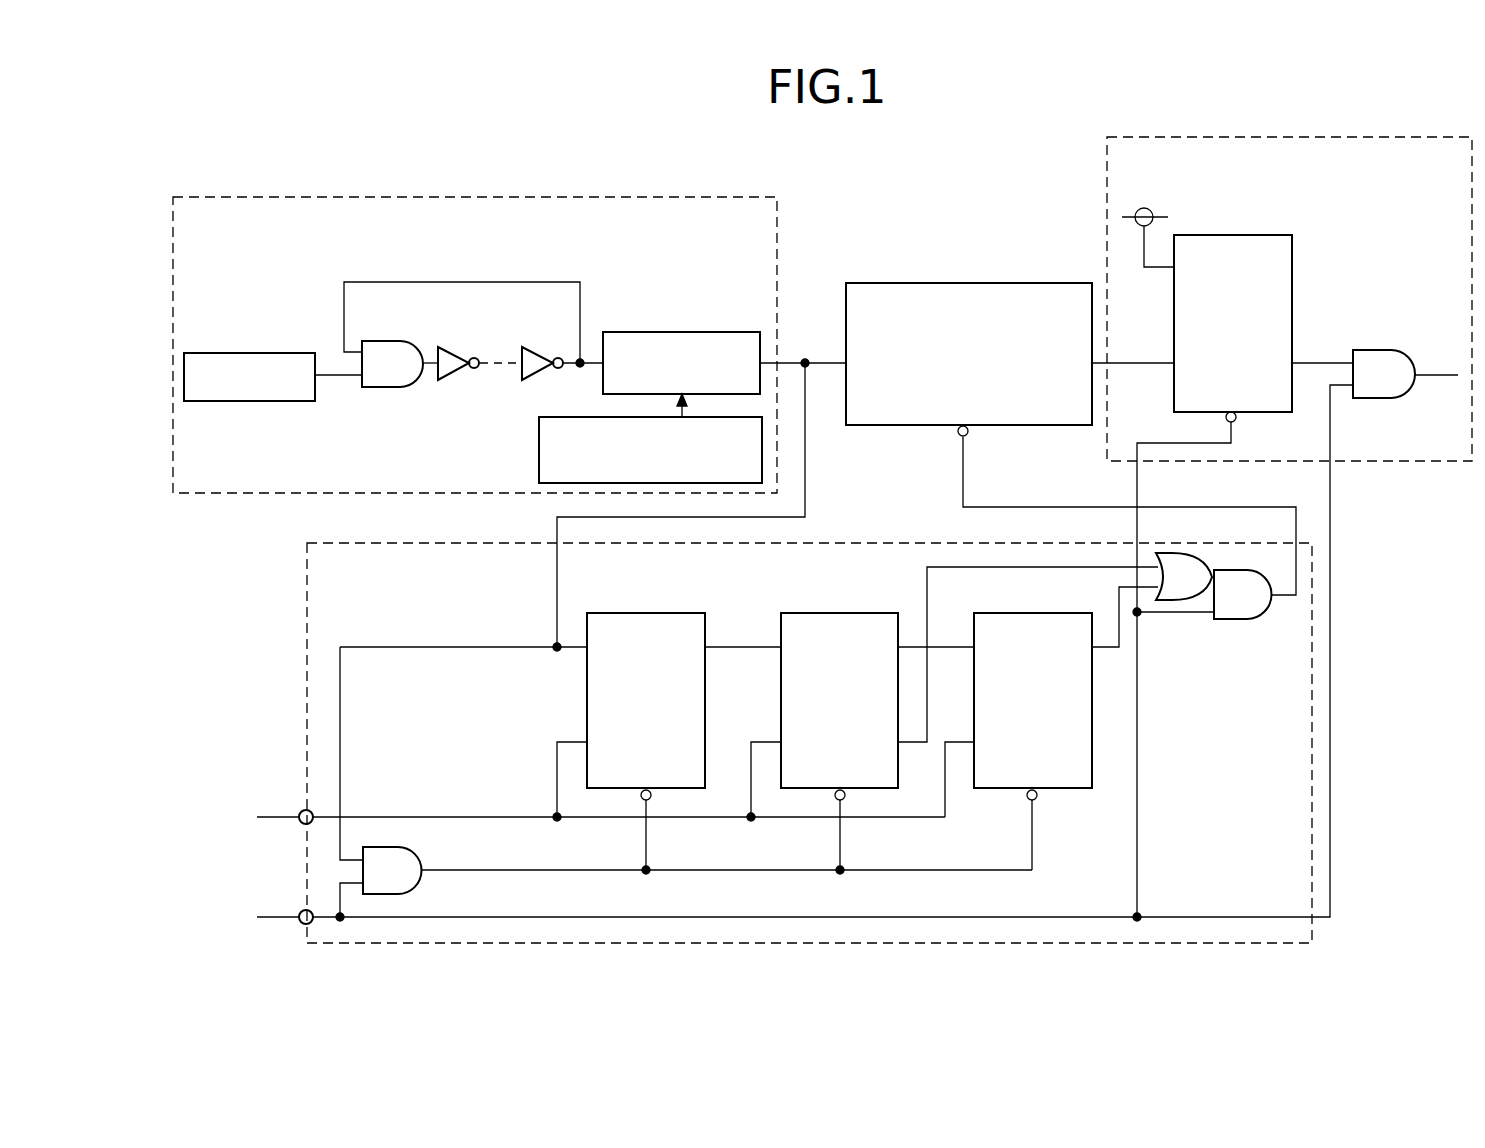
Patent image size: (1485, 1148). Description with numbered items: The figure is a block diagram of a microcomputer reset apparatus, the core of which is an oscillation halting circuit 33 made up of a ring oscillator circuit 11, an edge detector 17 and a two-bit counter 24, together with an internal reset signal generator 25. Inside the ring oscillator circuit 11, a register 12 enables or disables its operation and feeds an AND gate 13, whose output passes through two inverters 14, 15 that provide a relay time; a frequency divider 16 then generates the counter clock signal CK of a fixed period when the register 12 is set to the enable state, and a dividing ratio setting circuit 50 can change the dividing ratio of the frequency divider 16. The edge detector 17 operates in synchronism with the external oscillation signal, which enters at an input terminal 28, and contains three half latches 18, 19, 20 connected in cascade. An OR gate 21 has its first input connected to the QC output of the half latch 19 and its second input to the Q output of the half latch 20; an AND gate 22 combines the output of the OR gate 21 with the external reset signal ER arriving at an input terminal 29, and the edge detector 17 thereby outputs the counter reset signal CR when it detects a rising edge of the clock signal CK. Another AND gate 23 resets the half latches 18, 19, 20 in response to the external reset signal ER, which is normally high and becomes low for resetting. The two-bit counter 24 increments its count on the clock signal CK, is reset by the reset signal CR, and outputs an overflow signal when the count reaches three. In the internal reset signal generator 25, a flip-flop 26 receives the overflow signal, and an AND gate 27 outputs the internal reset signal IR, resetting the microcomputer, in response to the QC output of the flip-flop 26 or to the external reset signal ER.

The ring oscillator circuit 11 is at (510, 197).
The register 12 is at (256, 353).
The AND gate 13 is at (380, 341).
The inverter 14 is at (456, 350).
The inverter 15 is at (532, 347).
The frequency divider 16 is at (659, 332).
The dividing ratio setting circuit 50 is at (539, 455).
The edge detector 17 is at (307, 577).
The half latch 18 is at (648, 613).
The half latch 19 is at (840, 613).
The half latch 20 is at (1077, 788).
The OR gate 21 is at (1177, 600).
The AND gate 22 is at (1240, 619).
The AND gate 23 is at (428, 864).
The 2-bit counter 24 is at (935, 283).
The internal reset signal generator 25 is at (1107, 175).
The flip-flop 26 is at (1292, 257).
The AND gate 27 is at (1377, 350).
The input terminal 28 is at (298, 810).
The input terminal 29 is at (298, 910).
The oscillation halting circuit 33 is at (927, 167).